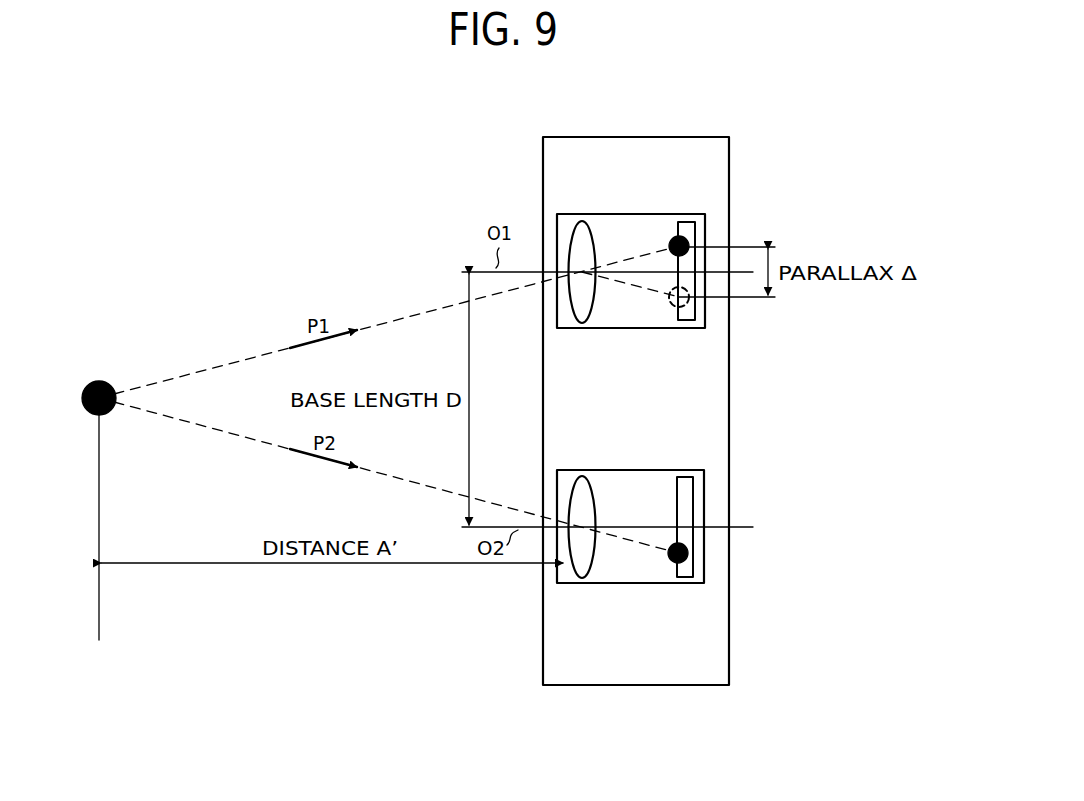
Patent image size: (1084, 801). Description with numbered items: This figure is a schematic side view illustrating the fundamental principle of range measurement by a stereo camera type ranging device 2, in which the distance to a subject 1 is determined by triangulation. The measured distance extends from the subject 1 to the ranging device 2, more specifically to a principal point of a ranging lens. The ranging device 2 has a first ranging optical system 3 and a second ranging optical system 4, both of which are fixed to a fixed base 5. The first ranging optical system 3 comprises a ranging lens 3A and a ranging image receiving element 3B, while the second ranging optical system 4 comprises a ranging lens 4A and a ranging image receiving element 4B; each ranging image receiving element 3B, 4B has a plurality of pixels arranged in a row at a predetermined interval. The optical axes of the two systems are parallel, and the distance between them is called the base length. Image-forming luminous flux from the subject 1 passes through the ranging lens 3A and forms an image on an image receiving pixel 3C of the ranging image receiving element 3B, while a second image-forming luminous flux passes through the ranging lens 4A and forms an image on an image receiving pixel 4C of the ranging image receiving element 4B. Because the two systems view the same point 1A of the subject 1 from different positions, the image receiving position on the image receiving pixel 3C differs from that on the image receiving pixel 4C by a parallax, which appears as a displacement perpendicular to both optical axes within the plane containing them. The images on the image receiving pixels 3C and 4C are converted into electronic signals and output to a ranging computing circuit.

The subject 1 is at (106, 383).
The point of the subject 1A is at (99, 398).
The ranging device 2 is at (699, 131).
The first ranging optical system 3 is at (666, 214).
The ranging lens 3A is at (572, 222).
The ranging image receiving element 3B is at (697, 306).
The image receiving pixel 3C is at (697, 238).
The second ranging optical system 4 is at (666, 470).
The ranging lens 4A is at (572, 580).
The ranging image receiving element 4B is at (696, 503).
The image receiving pixel 4C is at (695, 552).
The fixed base 5 is at (712, 640).